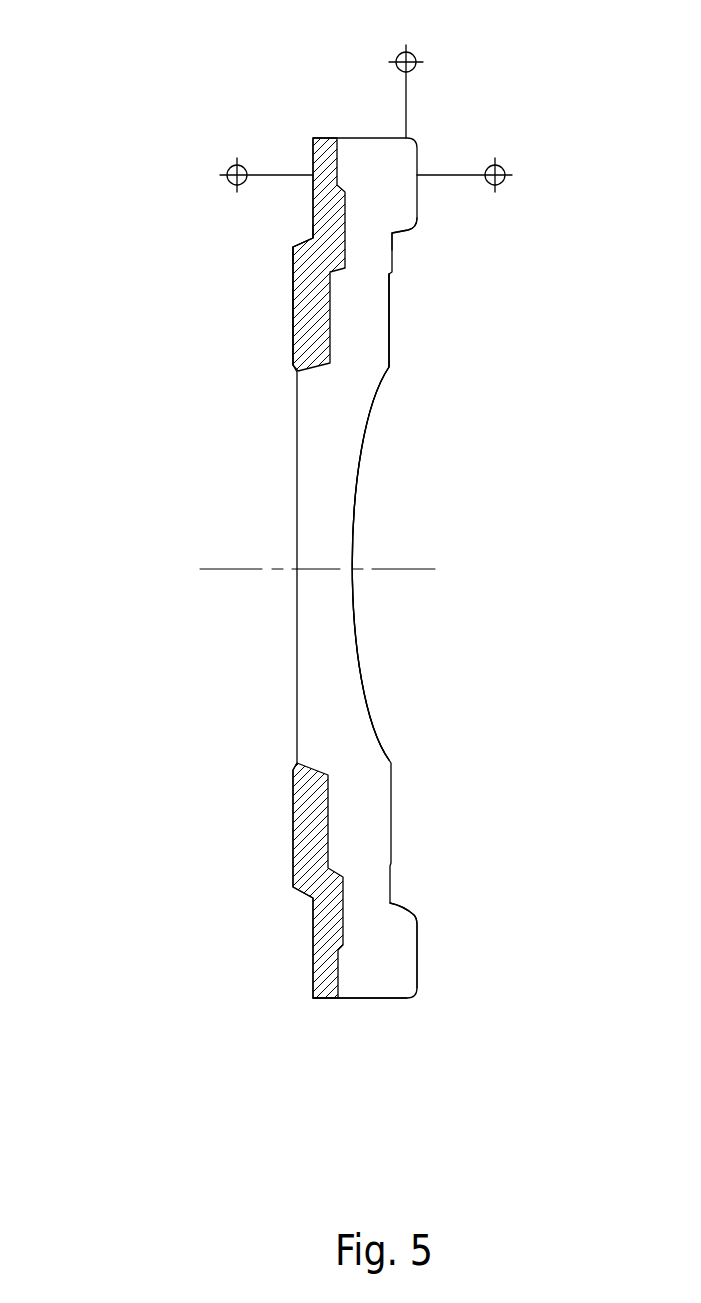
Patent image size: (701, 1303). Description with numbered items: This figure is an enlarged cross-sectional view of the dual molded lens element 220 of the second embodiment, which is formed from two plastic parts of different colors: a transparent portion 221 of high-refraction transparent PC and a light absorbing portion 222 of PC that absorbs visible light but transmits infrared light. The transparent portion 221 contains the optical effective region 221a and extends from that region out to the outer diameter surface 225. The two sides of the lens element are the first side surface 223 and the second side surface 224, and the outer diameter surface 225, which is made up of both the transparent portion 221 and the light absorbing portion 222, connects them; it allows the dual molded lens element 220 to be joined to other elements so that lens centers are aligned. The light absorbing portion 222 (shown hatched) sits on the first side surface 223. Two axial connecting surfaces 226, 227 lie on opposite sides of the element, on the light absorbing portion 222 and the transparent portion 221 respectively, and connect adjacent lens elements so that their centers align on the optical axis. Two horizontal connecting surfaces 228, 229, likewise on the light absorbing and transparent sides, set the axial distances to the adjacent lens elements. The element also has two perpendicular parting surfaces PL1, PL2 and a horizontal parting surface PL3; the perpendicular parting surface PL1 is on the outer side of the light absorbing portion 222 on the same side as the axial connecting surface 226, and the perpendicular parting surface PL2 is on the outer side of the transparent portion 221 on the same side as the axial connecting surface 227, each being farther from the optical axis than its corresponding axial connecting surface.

The dual molded lens element 220 is at (78, 65).
The transparent portion 221 is at (358, 140).
The optical effective region 221a is at (323, 593).
The light absorbing portion 222 is at (310, 323).
The first side surface 223 is at (278, 347).
The second side surface 224 is at (404, 338).
The outer diameter surface 225 is at (367, 998).
The axial connecting surface 226 is at (305, 242).
The axial connecting surface 227 is at (402, 233).
The horizontal connecting surface 228 is at (313, 928).
The horizontal connecting surface 229 is at (418, 953).
The perpendicular parting surface PL1 is at (236, 176).
The perpendicular parting surface PL2 is at (493, 176).
The horizontal parting surface PL3 is at (410, 72).